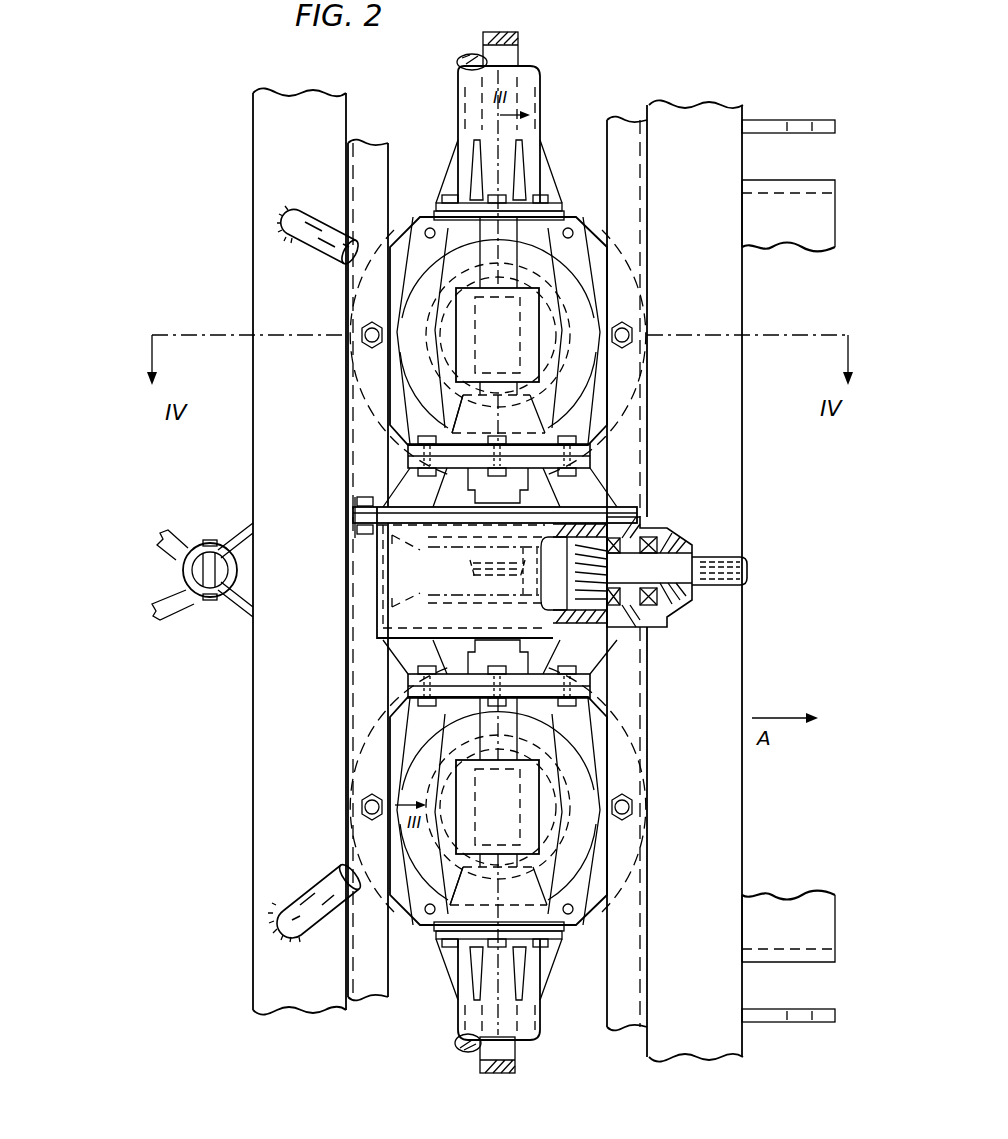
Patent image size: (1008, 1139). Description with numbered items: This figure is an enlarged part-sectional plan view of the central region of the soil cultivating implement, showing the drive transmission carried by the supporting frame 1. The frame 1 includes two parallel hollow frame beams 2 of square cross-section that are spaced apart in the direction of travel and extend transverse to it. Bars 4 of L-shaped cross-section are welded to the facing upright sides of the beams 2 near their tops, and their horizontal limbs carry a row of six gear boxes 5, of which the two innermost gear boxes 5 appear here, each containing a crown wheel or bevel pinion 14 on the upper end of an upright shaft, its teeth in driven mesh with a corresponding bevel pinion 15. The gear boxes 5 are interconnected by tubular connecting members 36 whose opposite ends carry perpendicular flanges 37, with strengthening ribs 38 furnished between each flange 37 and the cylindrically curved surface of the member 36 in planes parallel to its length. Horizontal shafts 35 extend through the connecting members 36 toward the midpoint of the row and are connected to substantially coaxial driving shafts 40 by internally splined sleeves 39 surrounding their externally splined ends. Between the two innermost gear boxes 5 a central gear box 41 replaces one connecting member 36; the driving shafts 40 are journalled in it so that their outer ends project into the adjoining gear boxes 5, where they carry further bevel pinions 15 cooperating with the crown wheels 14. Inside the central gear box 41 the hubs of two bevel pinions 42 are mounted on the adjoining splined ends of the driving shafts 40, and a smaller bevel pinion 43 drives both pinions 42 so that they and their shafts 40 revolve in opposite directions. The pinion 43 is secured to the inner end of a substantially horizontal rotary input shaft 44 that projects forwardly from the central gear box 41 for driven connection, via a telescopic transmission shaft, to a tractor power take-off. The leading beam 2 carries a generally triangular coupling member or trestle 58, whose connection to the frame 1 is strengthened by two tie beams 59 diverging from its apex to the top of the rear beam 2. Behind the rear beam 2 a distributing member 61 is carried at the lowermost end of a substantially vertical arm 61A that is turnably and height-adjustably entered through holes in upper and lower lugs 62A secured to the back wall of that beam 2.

The supporting frame 1 is at (742, 530).
The frame beams 2 is at (304, 97).
The bars of L-shaped cross-section 4 is at (380, 143).
The gear boxes 5 is at (588, 242).
The crown wheel or bevel pinion 14 is at (545, 421).
The bevel pinion 15 is at (454, 408).
The shafts 35 is at (518, 46).
The tubular connecting members 36 is at (540, 92).
The flanges 37 is at (562, 208).
The strengthening ribs 38 is at (472, 186).
The internally splined sleeves 39 is at (475, 303).
The driving shafts 40 is at (483, 735).
The central gear box 41 is at (380, 567).
The bevel pinions 42 is at (450, 558).
The smaller bevel pinion 43 is at (540, 623).
The rotary input shaft 44 is at (712, 592).
The coupling member or trestle 58 is at (791, 250).
The tie beams 59 is at (312, 250).
The distributing member 61 is at (194, 530).
The arm 61A is at (225, 550).
The lugs 62A is at (240, 612).